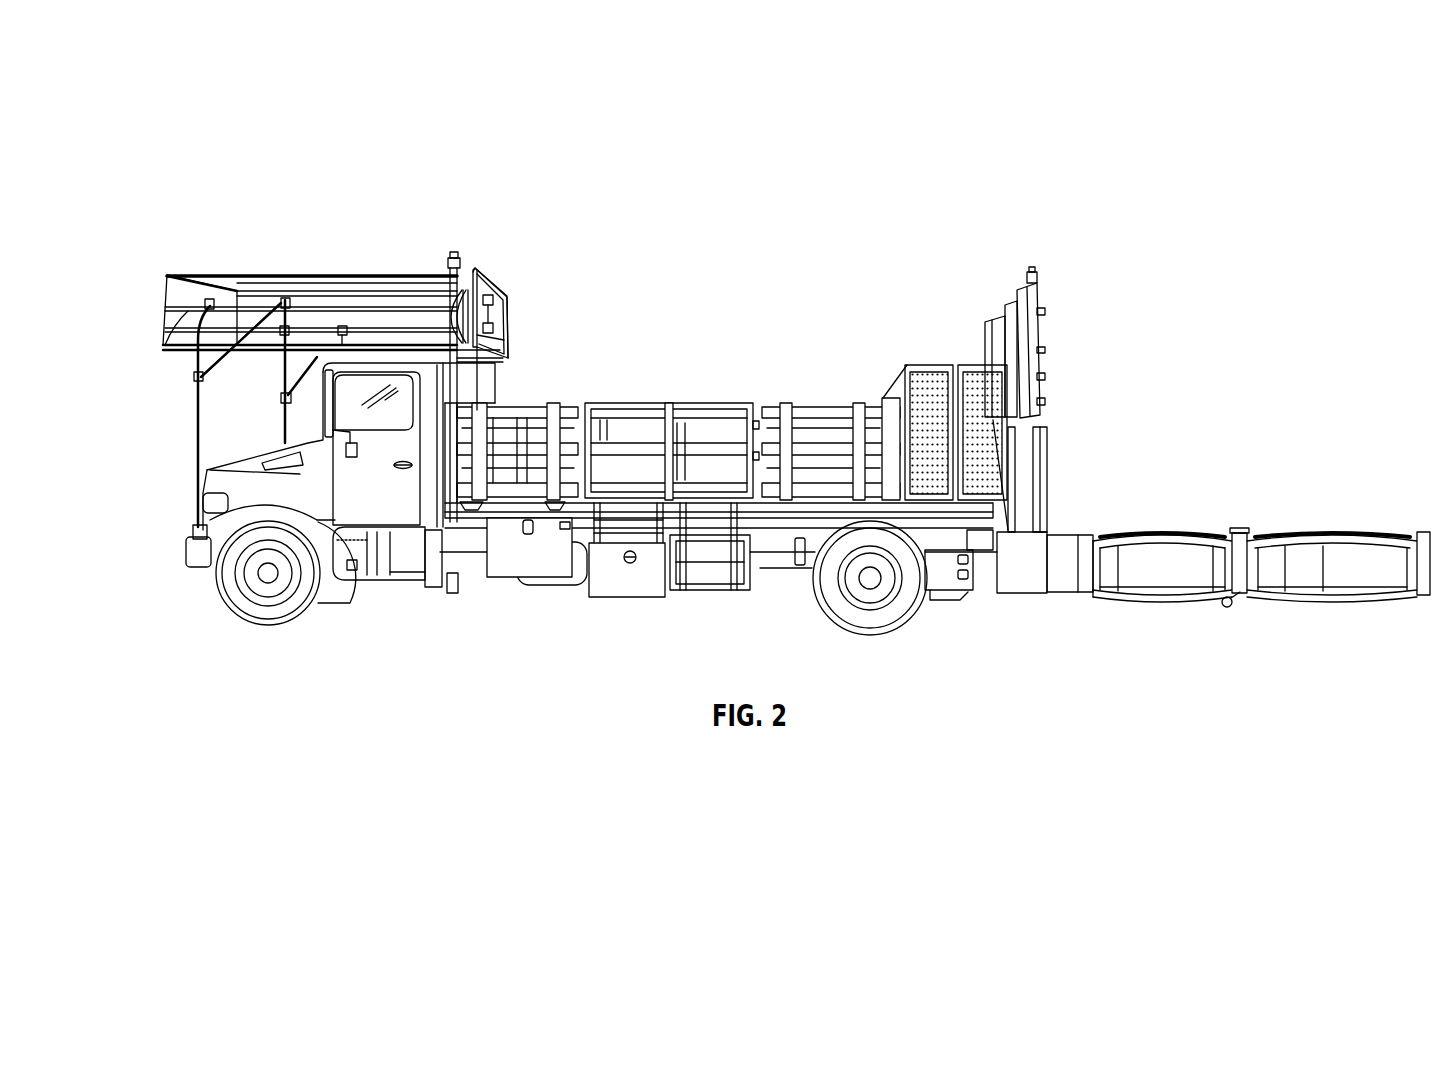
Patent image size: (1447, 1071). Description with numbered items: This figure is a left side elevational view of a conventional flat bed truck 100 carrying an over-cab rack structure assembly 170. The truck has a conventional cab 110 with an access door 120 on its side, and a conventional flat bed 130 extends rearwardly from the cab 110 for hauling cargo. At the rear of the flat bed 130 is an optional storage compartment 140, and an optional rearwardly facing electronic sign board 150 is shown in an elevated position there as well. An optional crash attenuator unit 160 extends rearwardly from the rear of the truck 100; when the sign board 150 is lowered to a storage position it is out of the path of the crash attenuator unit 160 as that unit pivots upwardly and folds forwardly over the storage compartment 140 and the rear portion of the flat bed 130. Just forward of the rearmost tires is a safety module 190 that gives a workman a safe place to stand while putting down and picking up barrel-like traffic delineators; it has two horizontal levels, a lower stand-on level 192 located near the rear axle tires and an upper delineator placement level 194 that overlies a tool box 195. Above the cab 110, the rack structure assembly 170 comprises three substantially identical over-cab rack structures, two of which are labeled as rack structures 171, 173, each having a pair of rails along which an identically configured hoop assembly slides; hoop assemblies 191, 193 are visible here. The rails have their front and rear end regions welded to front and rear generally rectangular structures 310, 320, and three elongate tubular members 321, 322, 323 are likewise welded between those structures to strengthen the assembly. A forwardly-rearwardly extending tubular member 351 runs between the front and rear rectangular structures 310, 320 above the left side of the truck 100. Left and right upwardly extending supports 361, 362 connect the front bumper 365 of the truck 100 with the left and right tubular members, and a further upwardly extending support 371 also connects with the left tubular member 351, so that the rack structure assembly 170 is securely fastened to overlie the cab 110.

The flat bed truck 100 is at (226, 652).
The cab 110 is at (442, 398).
The access door 120 is at (385, 503).
The flat bed 130 is at (748, 498).
The storage compartment 140 is at (932, 362).
The electronic sign board 150 is at (1045, 298).
The crash attenuator unit 160 is at (1268, 525).
The rack structure assembly 170 is at (483, 368).
The over-cab rack structure 171 is at (493, 296).
The over-cab rack structure 173 is at (487, 318).
The safety module 190 is at (672, 587).
The hoop assembly 191 is at (440, 320).
The stand-on level 192 is at (716, 577).
The hoop assembly 193 is at (503, 346).
The delineator placement level 194 is at (573, 578).
The tool box 195 is at (620, 580).
The front generally rectangular structure 310 is at (272, 313).
The rear generally rectangular structure 320 is at (508, 333).
The elongate tubular member 321 is at (263, 273).
The elongate tubular member 322 is at (313, 288).
The elongate tubular member 323 is at (340, 299).
The tubular member 351 is at (188, 312).
The left upwardly extending support 361 is at (197, 448).
The right upwardly extending support 362 is at (280, 427).
The front bumper 365 is at (195, 550).
The left upwardly extending support 371 is at (480, 273).